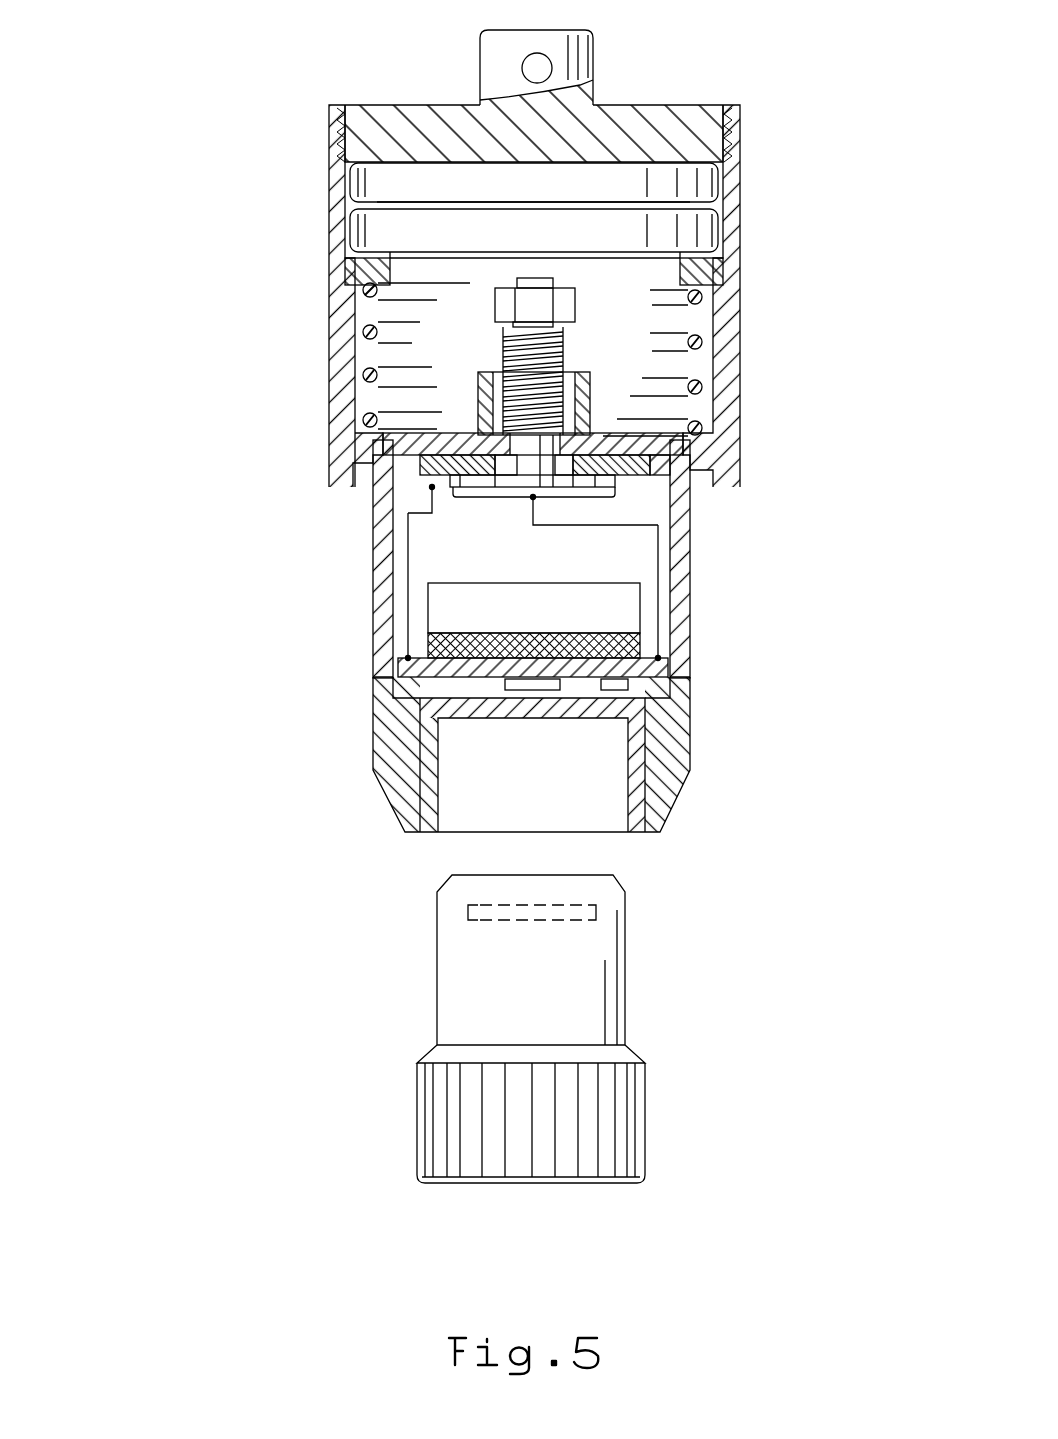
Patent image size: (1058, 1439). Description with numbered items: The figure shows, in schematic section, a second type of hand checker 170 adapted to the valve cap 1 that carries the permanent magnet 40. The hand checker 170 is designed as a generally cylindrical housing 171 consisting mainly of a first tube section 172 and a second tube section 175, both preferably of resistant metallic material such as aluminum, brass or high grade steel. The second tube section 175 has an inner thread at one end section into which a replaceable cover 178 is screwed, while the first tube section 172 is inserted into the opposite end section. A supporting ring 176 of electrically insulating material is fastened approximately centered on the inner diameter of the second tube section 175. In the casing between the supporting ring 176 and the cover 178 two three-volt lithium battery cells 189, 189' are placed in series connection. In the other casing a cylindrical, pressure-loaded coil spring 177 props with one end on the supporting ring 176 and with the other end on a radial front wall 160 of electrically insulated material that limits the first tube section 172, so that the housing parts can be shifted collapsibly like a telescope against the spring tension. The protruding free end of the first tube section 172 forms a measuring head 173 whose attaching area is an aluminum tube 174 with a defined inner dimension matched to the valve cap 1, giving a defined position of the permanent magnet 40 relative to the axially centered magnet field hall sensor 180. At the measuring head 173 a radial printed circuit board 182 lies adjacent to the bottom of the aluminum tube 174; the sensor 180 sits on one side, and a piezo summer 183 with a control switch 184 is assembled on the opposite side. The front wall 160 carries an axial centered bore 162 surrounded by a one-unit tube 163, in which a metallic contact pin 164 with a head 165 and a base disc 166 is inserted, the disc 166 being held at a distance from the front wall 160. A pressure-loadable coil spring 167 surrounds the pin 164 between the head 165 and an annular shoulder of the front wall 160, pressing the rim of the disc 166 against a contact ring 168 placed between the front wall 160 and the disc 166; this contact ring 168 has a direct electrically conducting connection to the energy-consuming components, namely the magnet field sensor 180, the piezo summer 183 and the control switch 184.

The valve cap 1 is at (428, 1090).
The permanent magnet 40 is at (587, 917).
The front wall 160 is at (383, 440).
The bore 162 is at (537, 463).
The tube 163 is at (593, 387).
The contact pin 164 is at (527, 460).
The head 165 is at (537, 276).
The disc 166 is at (620, 493).
The coil spring 167 is at (512, 353).
The contact ring 168 is at (620, 487).
The hand checker 170 is at (232, 412).
The housing 171 is at (375, 88).
The first tube section 172 is at (382, 617).
The measuring head 173 is at (357, 808).
The aluminum tube 174 is at (432, 822).
The second tube section 175 is at (338, 308).
The supporting ring 176 is at (717, 283).
The coil spring 177 is at (363, 374).
The cover 178 is at (675, 118).
The magnet field sensor 180 is at (547, 690).
The printed circuit board 182 is at (410, 667).
The piezo summer 183 is at (618, 603).
The control switch 184 is at (637, 642).
The battery cell 189 is at (480, 233).
The battery cell 189' is at (481, 177).